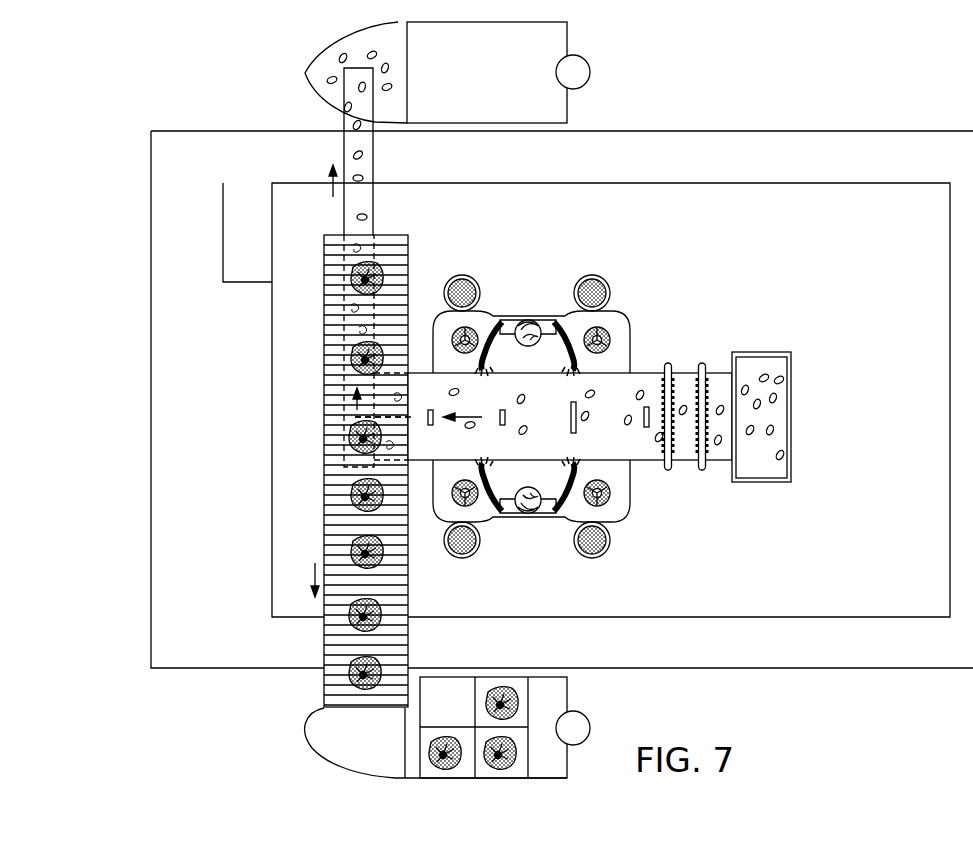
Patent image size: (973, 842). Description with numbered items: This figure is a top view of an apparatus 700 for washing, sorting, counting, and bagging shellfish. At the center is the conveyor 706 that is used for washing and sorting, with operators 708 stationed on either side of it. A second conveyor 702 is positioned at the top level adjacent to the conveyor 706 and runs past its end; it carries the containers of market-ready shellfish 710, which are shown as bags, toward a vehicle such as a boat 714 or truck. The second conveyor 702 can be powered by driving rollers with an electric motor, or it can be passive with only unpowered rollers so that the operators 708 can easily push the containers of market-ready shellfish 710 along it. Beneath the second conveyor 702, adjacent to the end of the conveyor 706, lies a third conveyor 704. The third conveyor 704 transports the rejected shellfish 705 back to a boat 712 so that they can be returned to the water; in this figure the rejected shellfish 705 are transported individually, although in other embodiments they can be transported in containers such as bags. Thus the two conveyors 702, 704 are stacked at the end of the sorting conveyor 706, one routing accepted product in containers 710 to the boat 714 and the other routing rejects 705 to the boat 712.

The apparatus 700 is at (797, 48).
The second conveyor 702 is at (397, 590).
The third conveyor 704 is at (377, 203).
The rejected shellfish 705 is at (372, 154).
The conveyor 706 is at (605, 400).
The operators 708 is at (524, 313).
The containers of market-ready shellfish 710 is at (383, 268).
The boat 712 is at (447, 72).
The boat 714 is at (372, 763).